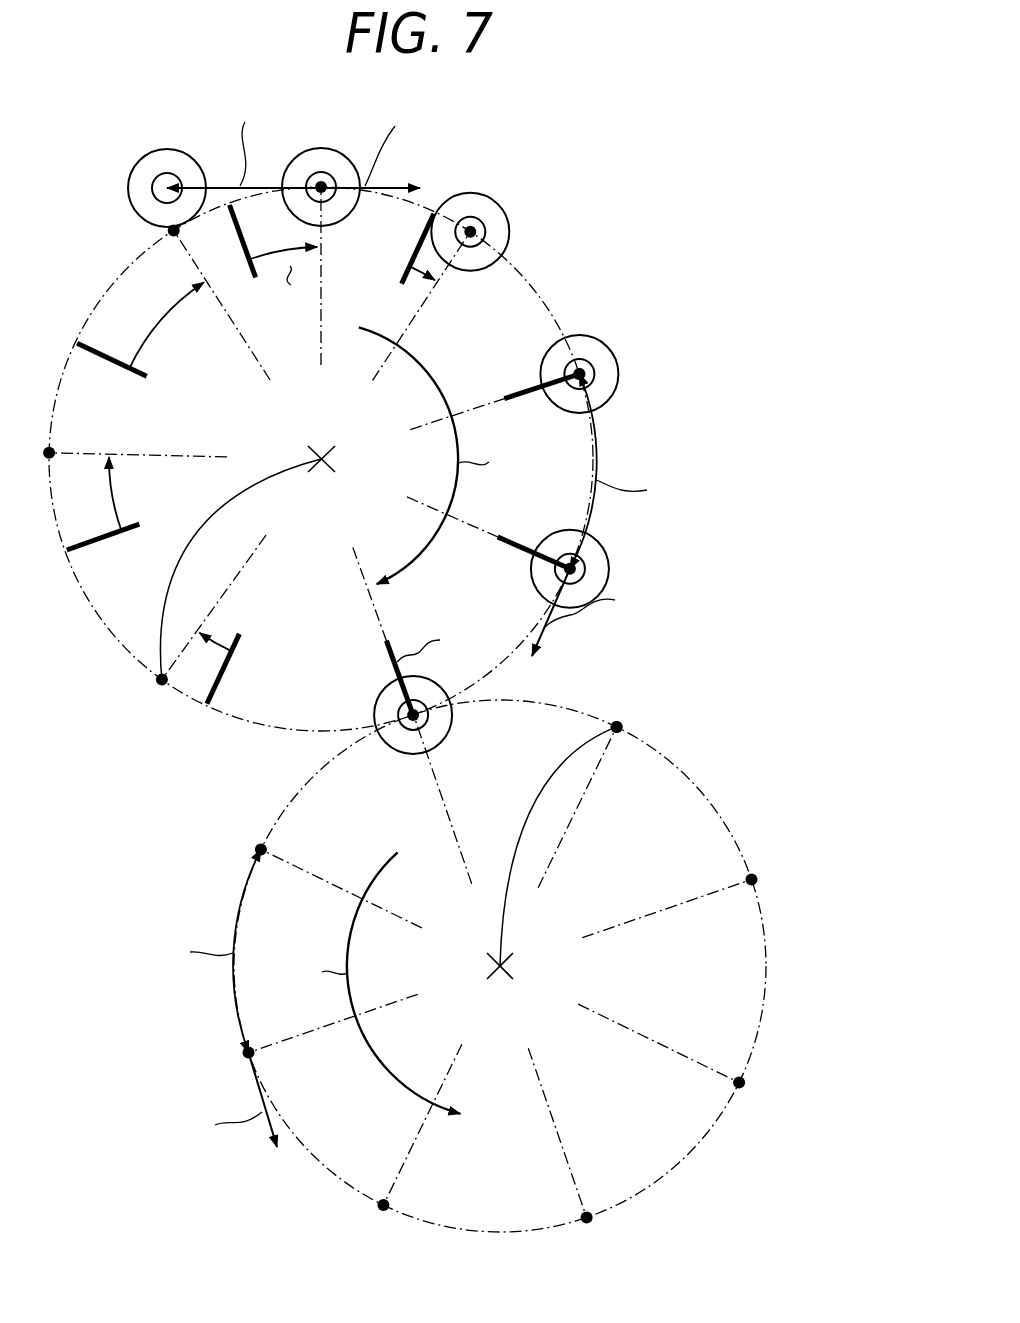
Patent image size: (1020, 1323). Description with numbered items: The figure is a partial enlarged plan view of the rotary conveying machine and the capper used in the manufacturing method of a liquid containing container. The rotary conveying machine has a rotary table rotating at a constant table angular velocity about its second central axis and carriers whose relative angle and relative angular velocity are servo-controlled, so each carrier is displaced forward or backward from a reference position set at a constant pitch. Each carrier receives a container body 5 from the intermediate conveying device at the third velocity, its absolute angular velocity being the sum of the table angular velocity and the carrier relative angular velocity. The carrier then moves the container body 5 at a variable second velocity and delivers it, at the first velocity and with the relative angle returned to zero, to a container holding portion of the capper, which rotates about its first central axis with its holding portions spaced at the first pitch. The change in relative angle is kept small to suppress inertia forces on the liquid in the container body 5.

The container body 5 is at (167, 148).